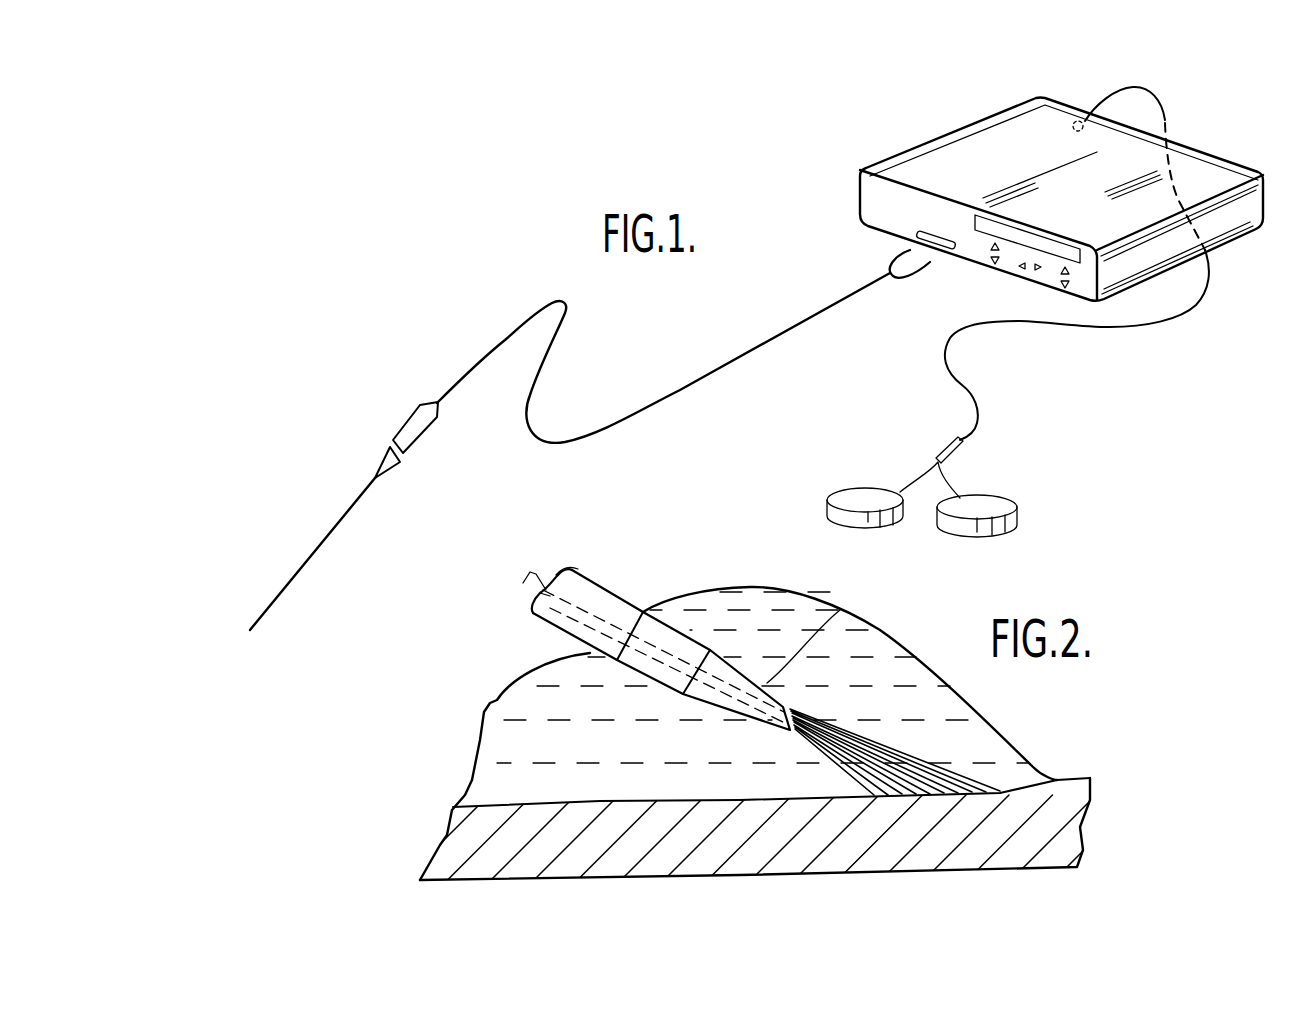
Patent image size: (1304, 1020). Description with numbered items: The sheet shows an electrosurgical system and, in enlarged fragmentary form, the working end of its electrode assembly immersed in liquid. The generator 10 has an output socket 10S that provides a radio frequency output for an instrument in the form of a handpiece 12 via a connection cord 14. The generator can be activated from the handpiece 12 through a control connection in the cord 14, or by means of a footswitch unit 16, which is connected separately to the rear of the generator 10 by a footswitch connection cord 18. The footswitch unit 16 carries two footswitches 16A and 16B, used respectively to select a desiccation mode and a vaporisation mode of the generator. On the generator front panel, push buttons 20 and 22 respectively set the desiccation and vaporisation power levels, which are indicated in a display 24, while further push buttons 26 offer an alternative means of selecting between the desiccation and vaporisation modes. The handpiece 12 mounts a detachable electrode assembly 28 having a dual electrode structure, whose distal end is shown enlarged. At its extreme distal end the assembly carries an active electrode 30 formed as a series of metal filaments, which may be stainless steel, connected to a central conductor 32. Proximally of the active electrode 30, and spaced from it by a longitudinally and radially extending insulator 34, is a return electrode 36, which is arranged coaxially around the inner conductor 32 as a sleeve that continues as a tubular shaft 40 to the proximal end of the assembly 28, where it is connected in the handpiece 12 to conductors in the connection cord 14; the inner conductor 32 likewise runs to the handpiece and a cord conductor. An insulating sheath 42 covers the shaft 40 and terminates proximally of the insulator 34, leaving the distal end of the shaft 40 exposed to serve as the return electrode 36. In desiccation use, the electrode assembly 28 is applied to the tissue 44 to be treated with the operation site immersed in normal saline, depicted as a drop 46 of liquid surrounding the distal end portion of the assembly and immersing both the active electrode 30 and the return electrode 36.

In FIG. 1, the generator 10 is at (893, 157).
In FIG. 1, the output socket 10S is at (907, 236).
In FIG. 1, the handpiece 12 is at (373, 429).
In FIG. 1, the connection cord 14 is at (698, 388).
In FIG. 1, the footswitch unit 16 is at (914, 463).
In FIG. 1, the footswitch 16A is at (837, 525).
In FIG. 1, the footswitch 16B is at (1017, 522).
In FIG. 1, the footswitch connection cord 18 is at (1103, 327).
In FIG. 1, the push buttons 20 is at (976, 268).
In FIG. 1, the push buttons 22 is at (1061, 306).
In FIG. 1, the display 24 is at (1047, 238).
In FIG. 1, the push buttons 26 is at (1026, 277).
In FIG. 1, the electrode assembly 28 is at (322, 541).
In FIG. 2, the electrode assembly 28 is at (607, 625).
In FIG. 2, the active electrode 30 is at (910, 767).
In FIG. 2, the central conductor 32 is at (607, 600).
In FIG. 2, the insulator 34 is at (838, 610).
In FIG. 2, the return electrode 36 is at (686, 612).
In FIG. 2, the tubular shaft 40 is at (530, 608).
In FIG. 2, the insulating sheath 42 is at (580, 567).
In FIG. 2, the tissue 44 is at (447, 828).
In FIG. 2, the drop of liquid 46 is at (907, 647).